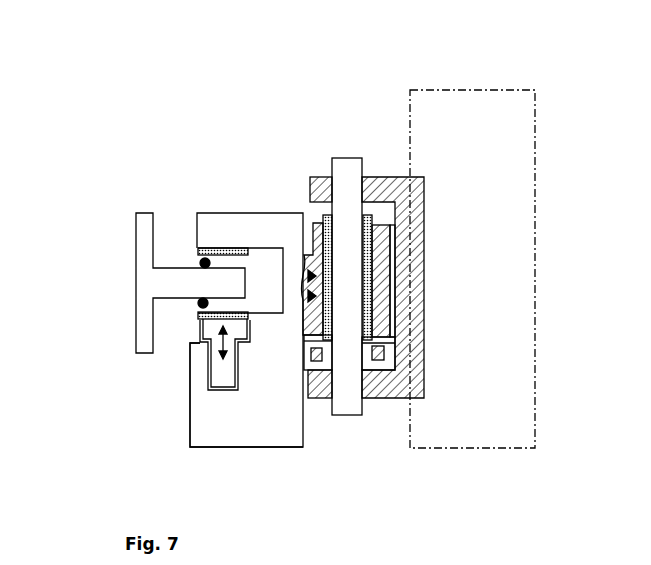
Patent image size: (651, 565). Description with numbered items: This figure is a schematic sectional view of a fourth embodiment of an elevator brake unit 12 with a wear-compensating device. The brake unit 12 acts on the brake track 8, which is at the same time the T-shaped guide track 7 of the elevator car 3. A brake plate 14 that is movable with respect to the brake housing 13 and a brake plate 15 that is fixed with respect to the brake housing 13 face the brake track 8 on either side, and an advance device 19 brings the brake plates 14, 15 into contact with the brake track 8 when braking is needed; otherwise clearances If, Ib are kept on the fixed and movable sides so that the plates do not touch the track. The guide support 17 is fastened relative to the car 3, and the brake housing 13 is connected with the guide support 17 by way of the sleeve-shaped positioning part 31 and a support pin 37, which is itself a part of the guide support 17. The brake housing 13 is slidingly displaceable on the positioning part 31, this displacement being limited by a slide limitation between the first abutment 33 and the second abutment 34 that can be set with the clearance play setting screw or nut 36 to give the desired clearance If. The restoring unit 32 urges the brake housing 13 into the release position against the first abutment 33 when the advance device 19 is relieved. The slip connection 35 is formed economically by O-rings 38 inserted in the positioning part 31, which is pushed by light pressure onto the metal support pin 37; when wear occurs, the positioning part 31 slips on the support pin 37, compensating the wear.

The car 3 is at (430, 435).
The guide track 7 is at (136, 283).
The brake track 8 is at (143, 268).
The brake unit 12 is at (180, 139).
The brake housing 13 is at (310, 248).
The brake plate 14 is at (200, 318).
The brake plate 15 is at (220, 252).
The guide support 17 is at (410, 195).
The advance device 19 is at (220, 372).
The positioning part 31 is at (387, 235).
The restoring unit 32 is at (372, 345).
The first abutment 33 is at (318, 225).
The second abutment 34 is at (378, 356).
The slip connection 35 is at (366, 295).
The clearance play setting screw or nut 36 is at (317, 355).
The support pin 37 is at (348, 165).
The O-rings 38 is at (378, 265).
The clearance If is at (203, 260).
The clearance Ib is at (200, 304).